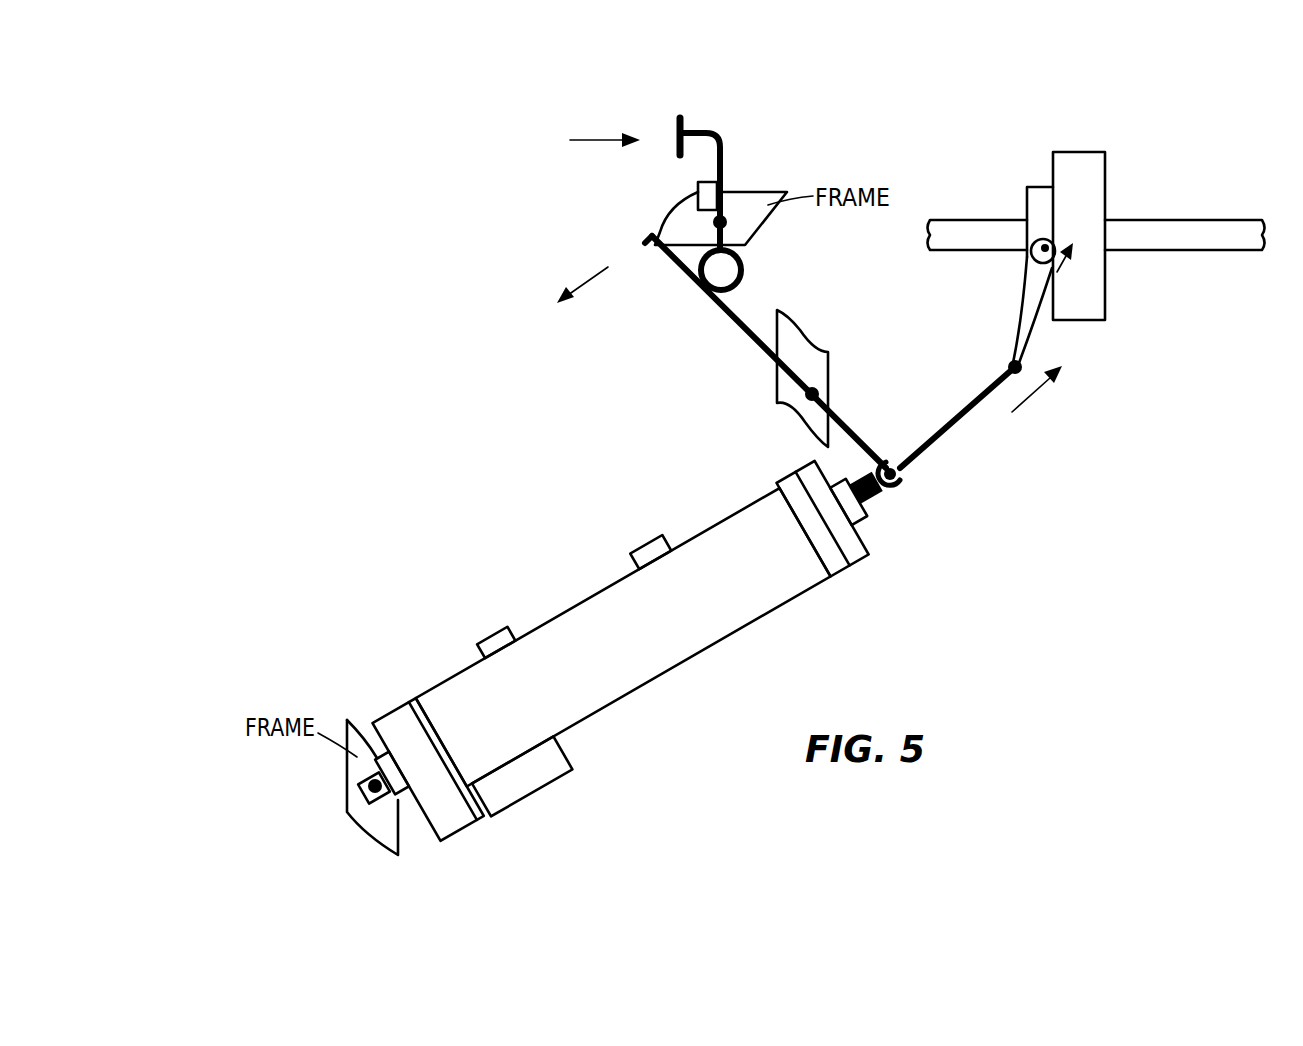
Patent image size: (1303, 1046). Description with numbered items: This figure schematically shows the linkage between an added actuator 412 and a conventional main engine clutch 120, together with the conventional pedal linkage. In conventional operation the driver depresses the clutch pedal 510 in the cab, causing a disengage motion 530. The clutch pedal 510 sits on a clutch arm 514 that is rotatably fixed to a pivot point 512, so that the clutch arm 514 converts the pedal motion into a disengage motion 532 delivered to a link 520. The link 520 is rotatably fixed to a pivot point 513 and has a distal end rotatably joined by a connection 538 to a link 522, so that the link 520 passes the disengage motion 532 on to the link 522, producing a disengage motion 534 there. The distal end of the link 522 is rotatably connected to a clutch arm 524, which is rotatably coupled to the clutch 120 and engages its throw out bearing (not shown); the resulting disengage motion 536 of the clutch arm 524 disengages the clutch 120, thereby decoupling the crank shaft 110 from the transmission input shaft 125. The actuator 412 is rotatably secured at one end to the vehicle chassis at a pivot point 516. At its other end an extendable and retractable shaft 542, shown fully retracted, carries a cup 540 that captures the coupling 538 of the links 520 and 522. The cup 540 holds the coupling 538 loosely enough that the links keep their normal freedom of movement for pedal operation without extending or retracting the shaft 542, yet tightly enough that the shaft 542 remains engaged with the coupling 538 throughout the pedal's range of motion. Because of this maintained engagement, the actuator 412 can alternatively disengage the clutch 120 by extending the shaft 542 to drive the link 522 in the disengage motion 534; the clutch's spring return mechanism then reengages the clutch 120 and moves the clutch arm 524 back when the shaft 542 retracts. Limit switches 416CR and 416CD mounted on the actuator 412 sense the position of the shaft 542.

The clutch pedal 510 is at (718, 94).
The clutch arm 514 is at (725, 168).
The pivot point 512 is at (727, 223).
The disengage motion 530 is at (534, 130).
The disengage motion 532 is at (545, 254).
The link 520 is at (732, 318).
The pivot point 513 is at (806, 397).
The crank shaft 110 is at (985, 228).
The transmission input shaft 125 is at (1175, 228).
The clutch 120 is at (1097, 160).
The clutch arm 524 is at (1025, 306).
The disengage motion 536 is at (1057, 272).
The link 522 is at (918, 460).
The disengage motion 534 is at (1096, 421).
The actuator 412 is at (680, 634).
The limit switch 416CD is at (515, 635).
The limit switch 416CR is at (640, 543).
The shaft 542 is at (860, 522).
The cup 540 is at (898, 490).
The connection 538 is at (893, 462).
The pivot point 516 is at (368, 802).